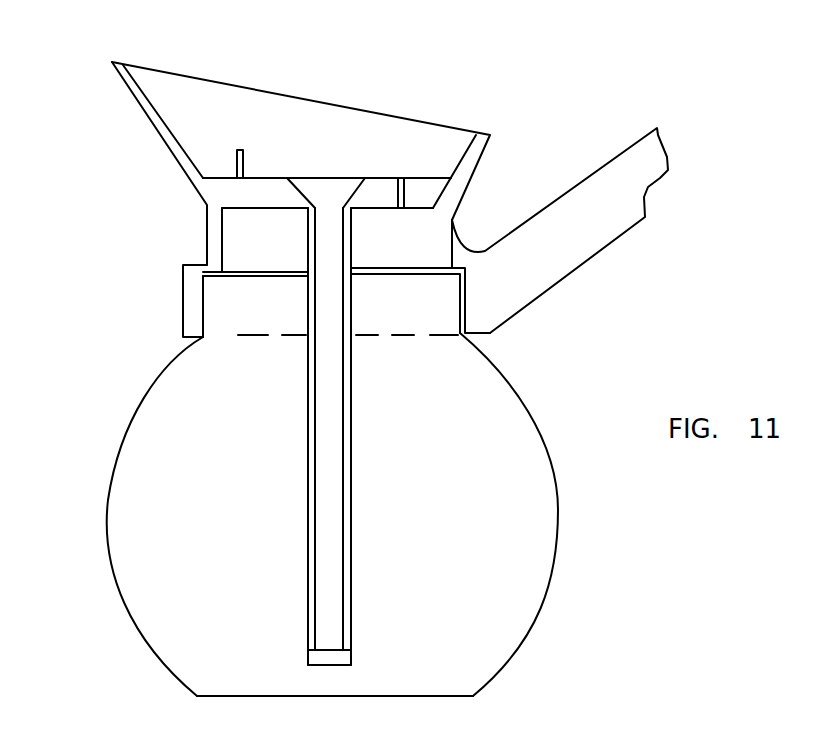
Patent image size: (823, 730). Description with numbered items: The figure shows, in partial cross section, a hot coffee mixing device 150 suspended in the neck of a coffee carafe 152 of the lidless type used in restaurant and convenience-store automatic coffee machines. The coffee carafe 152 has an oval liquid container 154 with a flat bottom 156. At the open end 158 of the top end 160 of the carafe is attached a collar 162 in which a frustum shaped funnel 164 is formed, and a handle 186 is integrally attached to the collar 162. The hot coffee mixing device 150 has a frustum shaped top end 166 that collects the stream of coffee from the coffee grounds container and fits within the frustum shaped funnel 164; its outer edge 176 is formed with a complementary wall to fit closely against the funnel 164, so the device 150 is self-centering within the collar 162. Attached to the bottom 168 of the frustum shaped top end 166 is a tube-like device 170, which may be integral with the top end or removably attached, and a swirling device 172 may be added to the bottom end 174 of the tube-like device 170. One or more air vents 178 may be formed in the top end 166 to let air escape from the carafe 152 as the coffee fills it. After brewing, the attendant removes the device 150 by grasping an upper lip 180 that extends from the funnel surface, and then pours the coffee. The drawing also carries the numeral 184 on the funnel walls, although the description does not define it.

The hot coffee mixing device 150 is at (285, 482).
The coffee carafe 152 is at (137, 373).
The liquid container 154 is at (123, 603).
The flat bottom 156 is at (225, 690).
The open end 158 is at (393, 357).
The top end 160 is at (203, 317).
The collar 162 is at (527, 334).
The frustum shaped funnel 164 is at (205, 70).
The frustum shaped top end 166 is at (383, 208).
The bottom 168 is at (277, 213).
The tube-like device 170 is at (295, 432).
The swirling device 172 is at (308, 658).
The bottom end 174 is at (353, 625).
The outer edge 176 is at (205, 200).
The air vent 178 is at (383, 208).
The upper lip 180 is at (235, 160).
The funnel wall 184 is at (147, 122).
The handle 186 is at (593, 260).